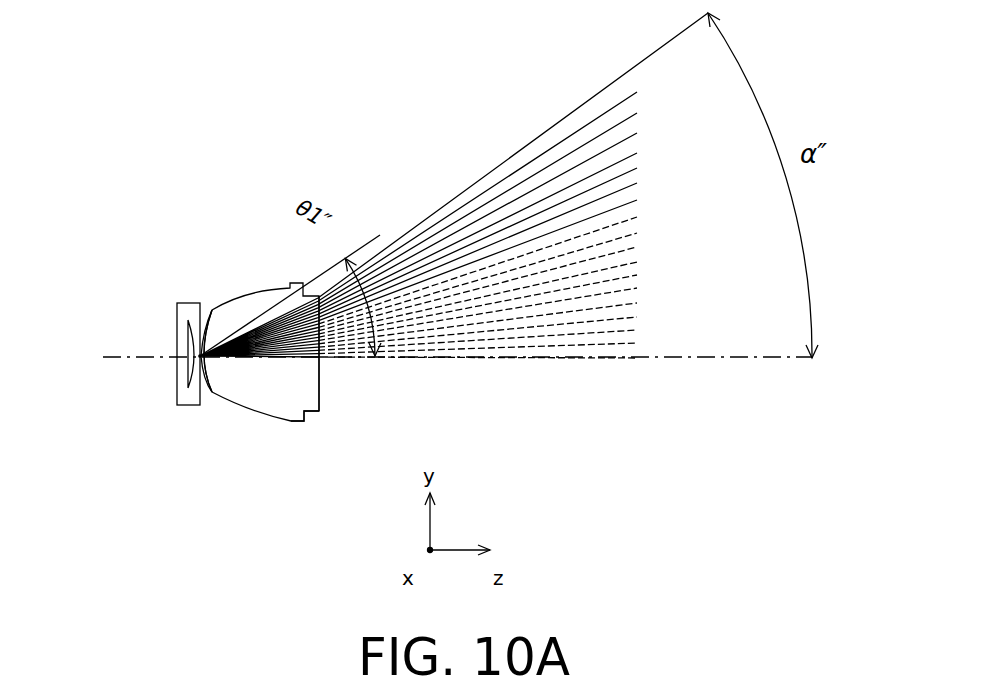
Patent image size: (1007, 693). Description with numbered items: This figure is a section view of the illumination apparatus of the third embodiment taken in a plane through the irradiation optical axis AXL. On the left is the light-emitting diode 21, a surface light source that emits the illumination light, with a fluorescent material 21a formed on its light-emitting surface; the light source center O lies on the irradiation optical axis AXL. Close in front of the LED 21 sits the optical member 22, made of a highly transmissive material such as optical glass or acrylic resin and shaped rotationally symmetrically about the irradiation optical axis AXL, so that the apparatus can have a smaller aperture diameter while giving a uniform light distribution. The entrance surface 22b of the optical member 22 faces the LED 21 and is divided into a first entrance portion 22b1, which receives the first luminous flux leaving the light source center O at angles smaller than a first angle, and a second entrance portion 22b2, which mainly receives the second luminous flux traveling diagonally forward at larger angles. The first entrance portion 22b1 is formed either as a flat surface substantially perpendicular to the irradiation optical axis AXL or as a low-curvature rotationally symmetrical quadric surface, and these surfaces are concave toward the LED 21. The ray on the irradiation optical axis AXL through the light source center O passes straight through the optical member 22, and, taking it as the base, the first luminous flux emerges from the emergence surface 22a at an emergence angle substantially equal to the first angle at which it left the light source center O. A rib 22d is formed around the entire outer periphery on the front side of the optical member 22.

The light-emitting diode 21 is at (178, 407).
The fluorescent material 21a is at (178, 322).
The light source center O is at (198, 358).
The optical member 22 is at (277, 403).
The emergence surface 22a is at (321, 380).
The entrance surface 22b is at (208, 393).
The first entrance portion 22b1 is at (207, 318).
The second entrance portion 22b2 is at (212, 318).
The rib 22d is at (300, 426).
The irradiation optical axis AXL is at (441, 338).